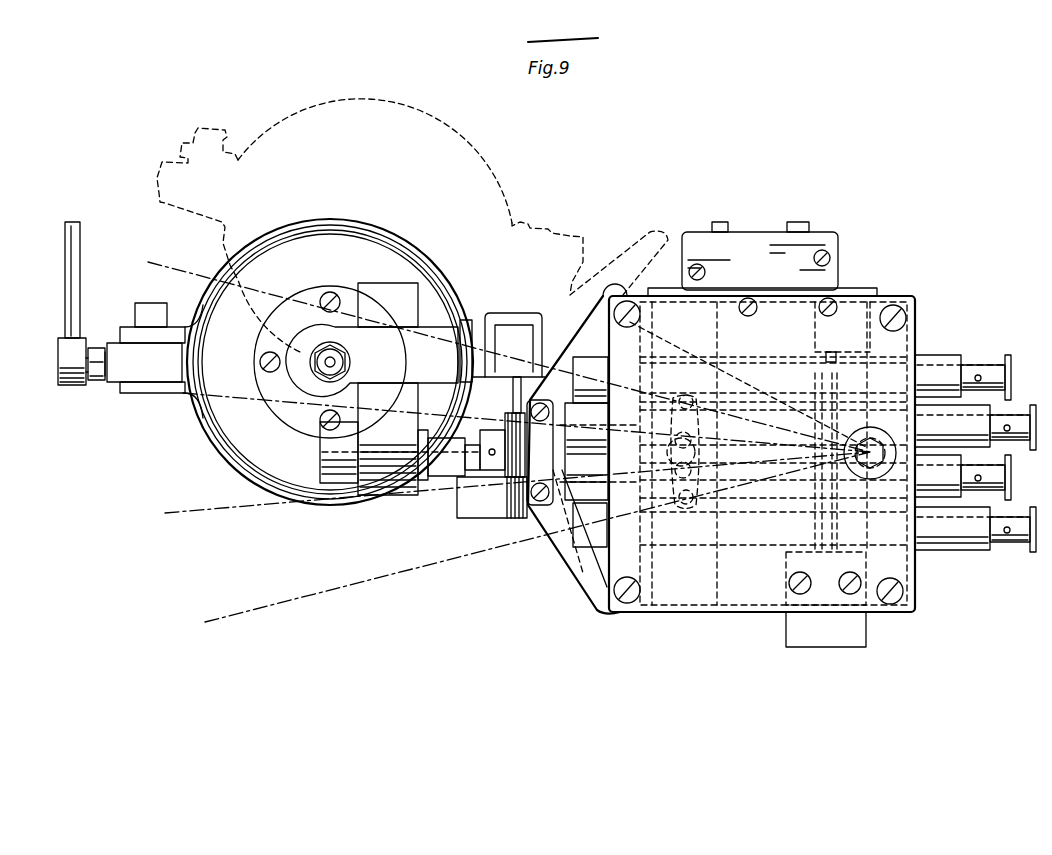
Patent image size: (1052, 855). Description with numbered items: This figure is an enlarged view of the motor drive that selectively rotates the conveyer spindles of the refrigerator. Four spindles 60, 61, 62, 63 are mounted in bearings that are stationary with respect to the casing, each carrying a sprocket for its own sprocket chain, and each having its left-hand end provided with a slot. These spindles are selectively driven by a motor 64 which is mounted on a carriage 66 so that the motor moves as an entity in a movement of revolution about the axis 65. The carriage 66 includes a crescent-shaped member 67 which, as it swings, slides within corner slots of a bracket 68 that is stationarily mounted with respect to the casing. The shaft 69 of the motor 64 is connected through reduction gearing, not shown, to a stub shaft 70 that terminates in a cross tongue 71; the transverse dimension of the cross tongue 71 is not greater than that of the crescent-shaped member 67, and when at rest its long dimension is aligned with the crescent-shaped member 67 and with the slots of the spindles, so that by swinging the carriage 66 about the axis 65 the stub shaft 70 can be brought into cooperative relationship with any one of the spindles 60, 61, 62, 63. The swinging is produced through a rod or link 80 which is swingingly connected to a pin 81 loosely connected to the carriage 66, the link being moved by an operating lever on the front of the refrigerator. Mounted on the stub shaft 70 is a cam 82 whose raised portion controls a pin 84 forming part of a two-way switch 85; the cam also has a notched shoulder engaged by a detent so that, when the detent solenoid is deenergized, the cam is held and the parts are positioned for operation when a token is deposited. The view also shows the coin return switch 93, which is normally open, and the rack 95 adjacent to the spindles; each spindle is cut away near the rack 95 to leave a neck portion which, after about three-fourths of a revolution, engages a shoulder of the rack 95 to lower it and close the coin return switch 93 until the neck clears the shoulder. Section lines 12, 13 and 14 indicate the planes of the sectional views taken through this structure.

The section line 12 is at (1028, 292).
The section line 13 is at (527, 232).
The section line 14 is at (822, 228).
The spindle 60 is at (976, 372).
The spindle 61 is at (1010, 440).
The spindle 62 is at (978, 492).
The spindle 63 is at (1003, 532).
The motor 64 is at (242, 433).
The axis 65 is at (880, 440).
The carriage 66 is at (500, 518).
The crescent-shaped member 67 is at (600, 600).
The bracket 68 is at (669, 305).
The shaft of the motor 69 is at (345, 358).
The stub shaft 70 is at (464, 486).
The cross tongue 71 is at (604, 430).
The rod or link 80 is at (68, 277).
The pin 81 is at (98, 384).
The cam 82 is at (506, 414).
The pin 84 is at (517, 378).
The two-way switch 85 is at (508, 318).
The coin return switch 93 is at (855, 302).
The rack 95 is at (829, 355).